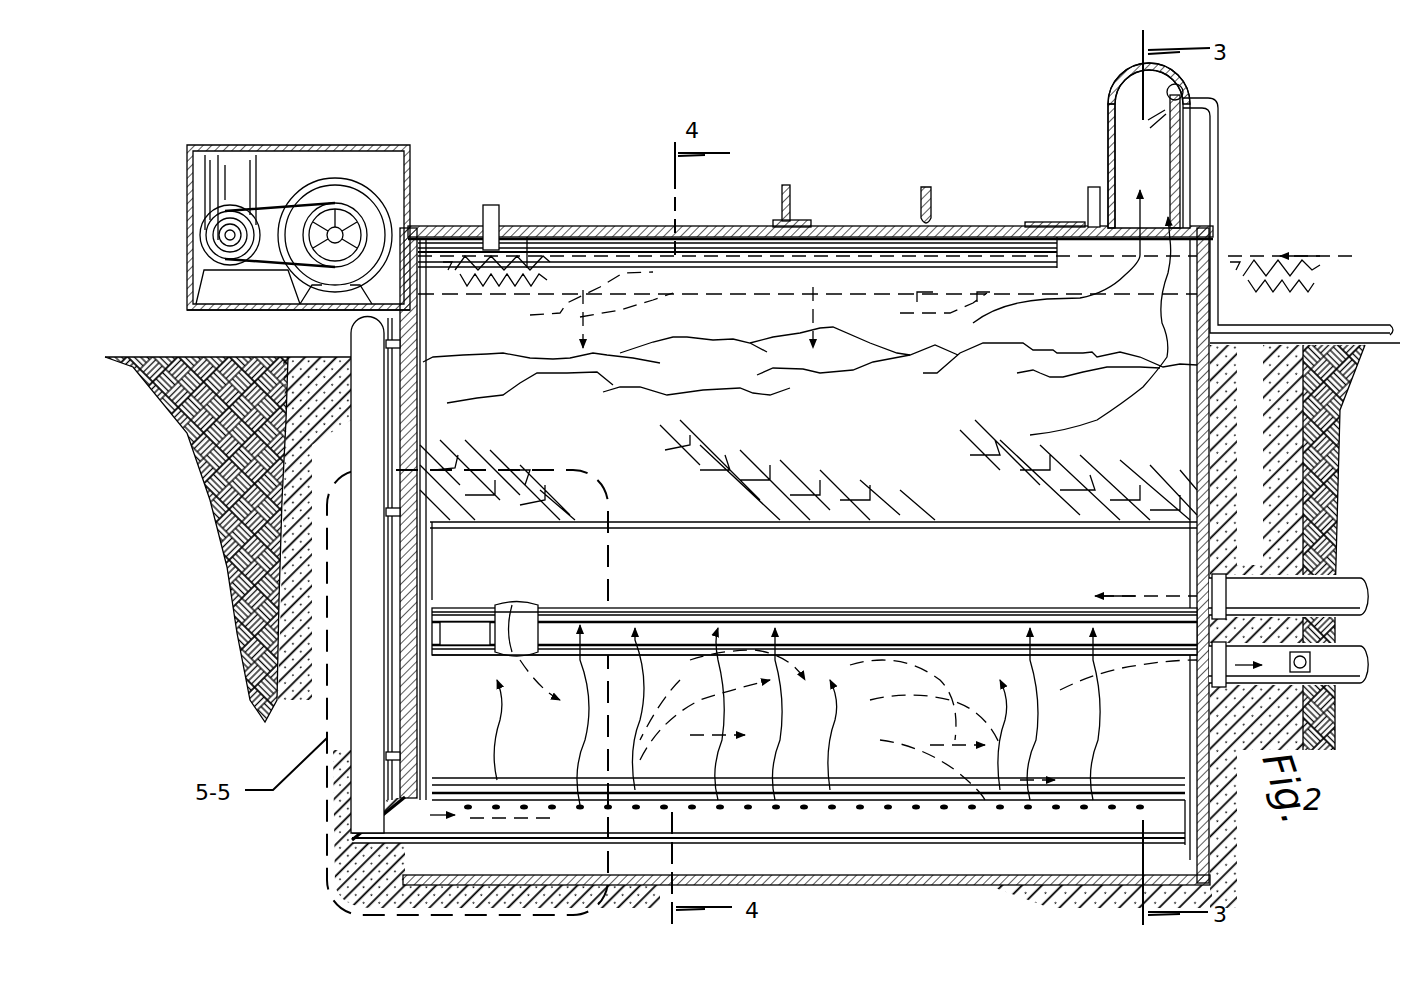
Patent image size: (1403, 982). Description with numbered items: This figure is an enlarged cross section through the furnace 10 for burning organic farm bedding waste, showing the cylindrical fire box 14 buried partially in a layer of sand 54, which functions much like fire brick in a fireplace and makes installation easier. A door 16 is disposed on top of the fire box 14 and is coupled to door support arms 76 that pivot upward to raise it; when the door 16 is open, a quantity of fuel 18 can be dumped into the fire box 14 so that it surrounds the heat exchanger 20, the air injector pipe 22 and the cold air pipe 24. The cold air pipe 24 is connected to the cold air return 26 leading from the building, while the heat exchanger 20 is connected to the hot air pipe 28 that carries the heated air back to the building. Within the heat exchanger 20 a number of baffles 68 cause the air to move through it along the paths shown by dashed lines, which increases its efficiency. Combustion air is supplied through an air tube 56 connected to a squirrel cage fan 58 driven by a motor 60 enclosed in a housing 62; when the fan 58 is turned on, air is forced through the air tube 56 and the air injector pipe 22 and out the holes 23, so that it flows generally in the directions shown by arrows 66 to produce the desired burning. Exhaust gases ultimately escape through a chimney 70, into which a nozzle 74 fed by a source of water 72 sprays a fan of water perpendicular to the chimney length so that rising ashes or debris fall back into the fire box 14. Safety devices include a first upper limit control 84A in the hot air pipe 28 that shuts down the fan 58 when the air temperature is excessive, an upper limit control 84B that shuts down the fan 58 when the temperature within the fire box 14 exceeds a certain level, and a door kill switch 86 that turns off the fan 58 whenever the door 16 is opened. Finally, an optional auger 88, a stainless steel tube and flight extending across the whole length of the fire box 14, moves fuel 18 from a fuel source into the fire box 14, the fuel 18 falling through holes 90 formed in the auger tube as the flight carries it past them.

The furnace 10 is at (570, 195).
The fire box 14 is at (470, 205).
The door 16 is at (828, 205).
The fuel 18 is at (500, 356).
The heat exchanger 20 is at (883, 645).
The air injector pipe 22 is at (650, 872).
The holes 23 is at (690, 790).
The cold air pipe 24 is at (890, 572).
The cold air return 26 is at (1340, 580).
The hot air pipe 28 is at (1290, 690).
The layer of sand 54 is at (400, 838).
The air tube 56 is at (352, 830).
The squirrel cage fan 58 is at (338, 180).
The motor 60 is at (240, 210).
The housing 62 is at (355, 145).
The arrows 66 is at (520, 790).
The baffles 68 is at (690, 700).
The chimney 70 is at (1178, 80).
The source of water 72 is at (1218, 105).
The nozzle 74 is at (1180, 95).
The door support arms 76 is at (788, 190).
The first upper limit control 84A is at (1305, 680).
The upper limit control 84B is at (1092, 190).
The door kill switch 86 is at (492, 205).
The auger 88 is at (1252, 250).
The holes 90 is at (548, 316).